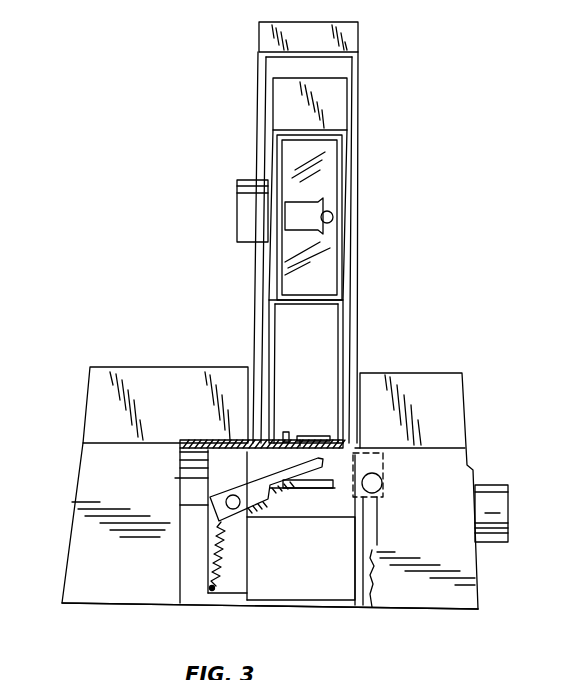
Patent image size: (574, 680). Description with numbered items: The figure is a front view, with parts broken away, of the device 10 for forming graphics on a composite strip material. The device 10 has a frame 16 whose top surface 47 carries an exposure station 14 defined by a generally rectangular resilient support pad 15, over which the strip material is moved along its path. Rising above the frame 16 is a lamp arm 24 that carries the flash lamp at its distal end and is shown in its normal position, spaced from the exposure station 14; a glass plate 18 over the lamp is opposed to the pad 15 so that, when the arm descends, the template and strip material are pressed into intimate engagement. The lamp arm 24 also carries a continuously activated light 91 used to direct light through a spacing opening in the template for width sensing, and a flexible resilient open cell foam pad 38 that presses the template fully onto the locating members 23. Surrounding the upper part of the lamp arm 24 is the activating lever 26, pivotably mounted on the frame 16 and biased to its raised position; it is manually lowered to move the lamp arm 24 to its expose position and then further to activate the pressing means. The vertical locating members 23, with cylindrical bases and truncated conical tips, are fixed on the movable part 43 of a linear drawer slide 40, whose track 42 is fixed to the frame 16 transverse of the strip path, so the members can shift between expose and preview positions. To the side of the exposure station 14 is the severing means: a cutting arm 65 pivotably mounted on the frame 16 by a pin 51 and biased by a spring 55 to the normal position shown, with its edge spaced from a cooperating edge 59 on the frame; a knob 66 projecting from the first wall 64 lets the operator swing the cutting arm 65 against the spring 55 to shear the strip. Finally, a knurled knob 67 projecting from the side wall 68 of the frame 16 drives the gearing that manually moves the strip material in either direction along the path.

The device for forming graphics 10 is at (475, 350).
The exposure station 14 is at (308, 432).
The resilient support pad 15 is at (321, 437).
The frame 16 is at (118, 607).
The glass plate 18 is at (332, 177).
The locating members 23 is at (286, 432).
The lamp arm 24 is at (287, 100).
The activating lever 26 is at (362, 39).
The foam pad 38 is at (240, 218).
The linear drawer slide 40 is at (176, 478).
The track 42 is at (187, 489).
The movable part 43 is at (182, 470).
The top surface 47 is at (193, 440).
The pin 51 is at (246, 513).
The spring 55 is at (214, 556).
The edge 59 is at (327, 486).
The first wall 64 is at (152, 572).
The cutting arm 65 is at (274, 489).
The knob 66 is at (382, 481).
The knurled knob 67 is at (501, 486).
The side wall 68 is at (478, 573).
The light 91 is at (340, 228).